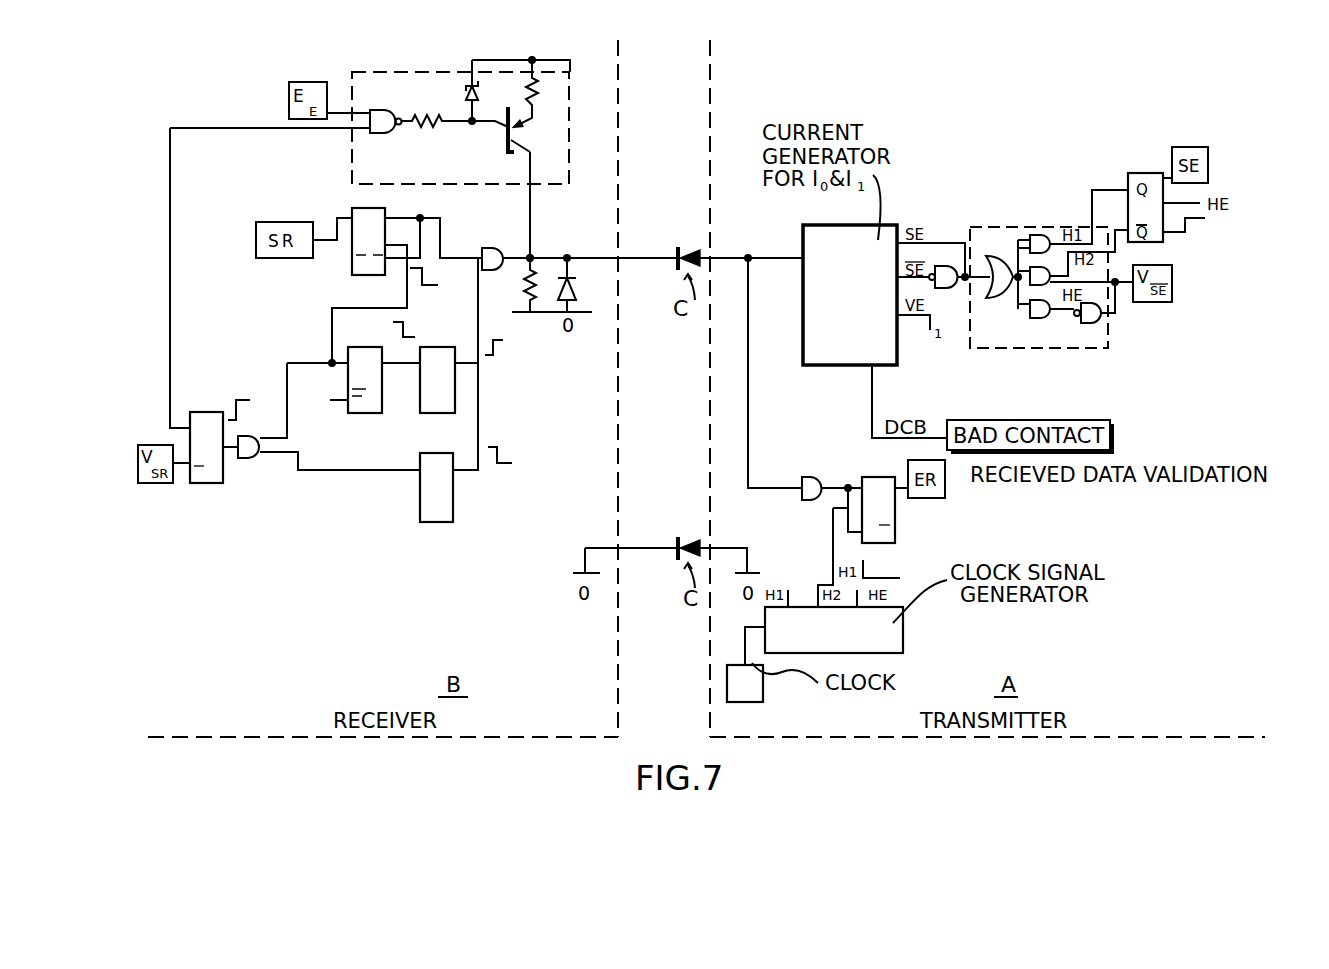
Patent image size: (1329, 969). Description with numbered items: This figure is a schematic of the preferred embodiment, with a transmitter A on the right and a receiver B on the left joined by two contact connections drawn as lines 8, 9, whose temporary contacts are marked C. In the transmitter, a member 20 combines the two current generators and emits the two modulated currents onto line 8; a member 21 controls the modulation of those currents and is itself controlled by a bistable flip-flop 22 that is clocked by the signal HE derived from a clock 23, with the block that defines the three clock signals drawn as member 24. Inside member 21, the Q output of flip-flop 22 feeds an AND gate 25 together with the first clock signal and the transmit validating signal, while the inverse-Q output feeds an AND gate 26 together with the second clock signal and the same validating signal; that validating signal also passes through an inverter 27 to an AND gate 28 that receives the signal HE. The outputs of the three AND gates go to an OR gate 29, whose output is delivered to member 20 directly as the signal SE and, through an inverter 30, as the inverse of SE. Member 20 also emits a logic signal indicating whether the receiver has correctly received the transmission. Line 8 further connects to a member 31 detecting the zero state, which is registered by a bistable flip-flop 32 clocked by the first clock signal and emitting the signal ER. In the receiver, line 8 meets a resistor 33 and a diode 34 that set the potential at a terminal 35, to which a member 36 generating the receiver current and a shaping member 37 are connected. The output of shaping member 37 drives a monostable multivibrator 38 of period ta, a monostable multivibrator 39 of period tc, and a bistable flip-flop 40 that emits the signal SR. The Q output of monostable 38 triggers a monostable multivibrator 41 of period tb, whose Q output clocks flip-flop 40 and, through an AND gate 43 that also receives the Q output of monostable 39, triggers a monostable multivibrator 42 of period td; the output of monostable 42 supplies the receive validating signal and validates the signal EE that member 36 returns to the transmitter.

The line 8 is at (658, 258).
The line 9 is at (650, 560).
The member 20 is at (863, 232).
The member 21 is at (1058, 345).
The bistable flip-flop 22 is at (1133, 173).
The clock 23 is at (752, 672).
The clock signal generator 24 is at (905, 635).
The AND gate 25 is at (1038, 235).
The AND gate 26 is at (1030, 285).
The inverter 27 is at (1090, 323).
The AND gate 28 is at (1040, 318).
The OR gate 29 is at (995, 298).
The inverter 30 is at (946, 288).
The member 31 is at (808, 500).
The bistable flip-flop 32 is at (912, 510).
The resistor 33 is at (524, 280).
The diode 34 is at (580, 292).
The terminal 35 is at (533, 256).
The member 36 is at (558, 142).
The shaping member 37 is at (490, 248).
The monostable multivibrator 38 is at (441, 347).
The monostable multivibrator 39 is at (453, 500).
The bistable flip-flop 40 is at (356, 274).
The monostable multivibrator 41 is at (376, 347).
The monostable multivibrator 42 is at (207, 412).
The AND gate 43 is at (250, 436).